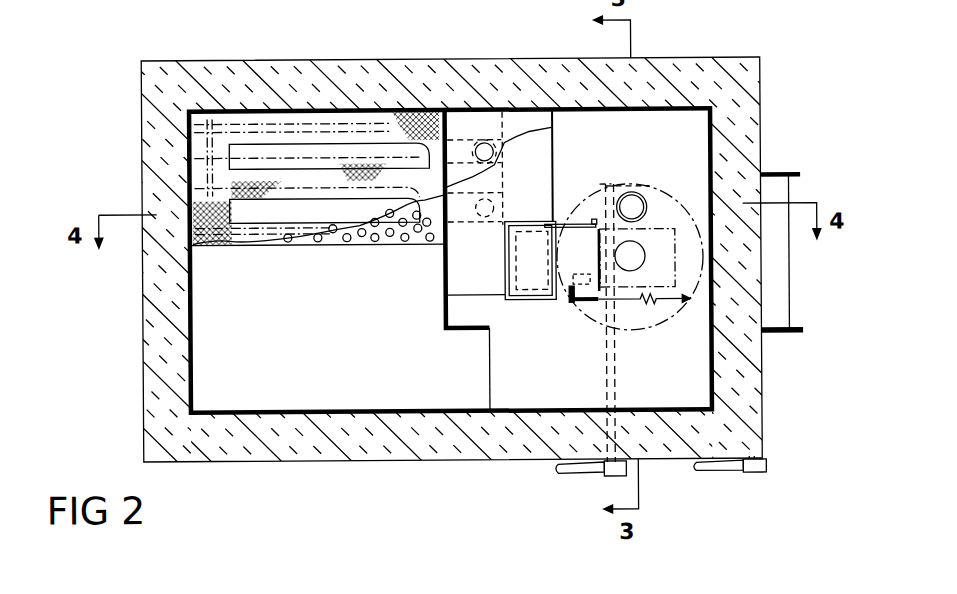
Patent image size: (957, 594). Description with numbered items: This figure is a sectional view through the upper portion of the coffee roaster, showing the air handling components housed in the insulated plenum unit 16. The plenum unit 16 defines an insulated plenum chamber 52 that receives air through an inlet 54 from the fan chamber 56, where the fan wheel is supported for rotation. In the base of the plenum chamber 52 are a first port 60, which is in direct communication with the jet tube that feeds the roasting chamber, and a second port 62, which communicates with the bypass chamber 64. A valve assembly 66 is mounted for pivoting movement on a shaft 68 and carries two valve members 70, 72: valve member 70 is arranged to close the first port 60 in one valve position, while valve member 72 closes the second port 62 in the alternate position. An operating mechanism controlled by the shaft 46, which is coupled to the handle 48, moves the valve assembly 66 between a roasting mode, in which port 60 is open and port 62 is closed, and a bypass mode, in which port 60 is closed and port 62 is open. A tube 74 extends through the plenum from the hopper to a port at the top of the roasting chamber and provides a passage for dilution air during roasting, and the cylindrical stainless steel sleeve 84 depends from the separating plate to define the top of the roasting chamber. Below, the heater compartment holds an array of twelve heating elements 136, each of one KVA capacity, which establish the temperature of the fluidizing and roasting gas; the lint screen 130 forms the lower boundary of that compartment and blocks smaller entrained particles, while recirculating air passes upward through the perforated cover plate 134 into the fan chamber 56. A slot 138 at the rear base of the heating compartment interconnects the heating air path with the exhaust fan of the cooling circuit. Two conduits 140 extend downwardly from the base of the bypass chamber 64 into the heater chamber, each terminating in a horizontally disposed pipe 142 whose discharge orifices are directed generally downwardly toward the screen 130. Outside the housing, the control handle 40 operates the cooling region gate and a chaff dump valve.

The plenum unit 16 is at (762, 90).
The slot 138 is at (200, 151).
The horizontally disposed pipe 142 is at (277, 147).
The lint screen 130 is at (427, 118).
The heating elements 136 is at (279, 235).
The perforated cover plate 134 is at (383, 237).
The fan chamber 56 is at (310, 348).
The inlet 54 is at (490, 365).
The bypass chamber 64 is at (472, 133).
The conduits 140 is at (512, 112).
The plenum chamber 52 is at (617, 132).
The second port 62 is at (517, 255).
The valve member 72 is at (527, 300).
The valve assembly 66 is at (582, 256).
The valve member 70 is at (584, 250).
The shaft 68 is at (597, 305).
The tube 74 is at (643, 198).
The first port 60 is at (642, 262).
The cylindrical stainless steel sleeve 84 is at (628, 333).
The shaft 46 is at (612, 370).
The handle 48 is at (553, 471).
The control handle 40 is at (693, 468).